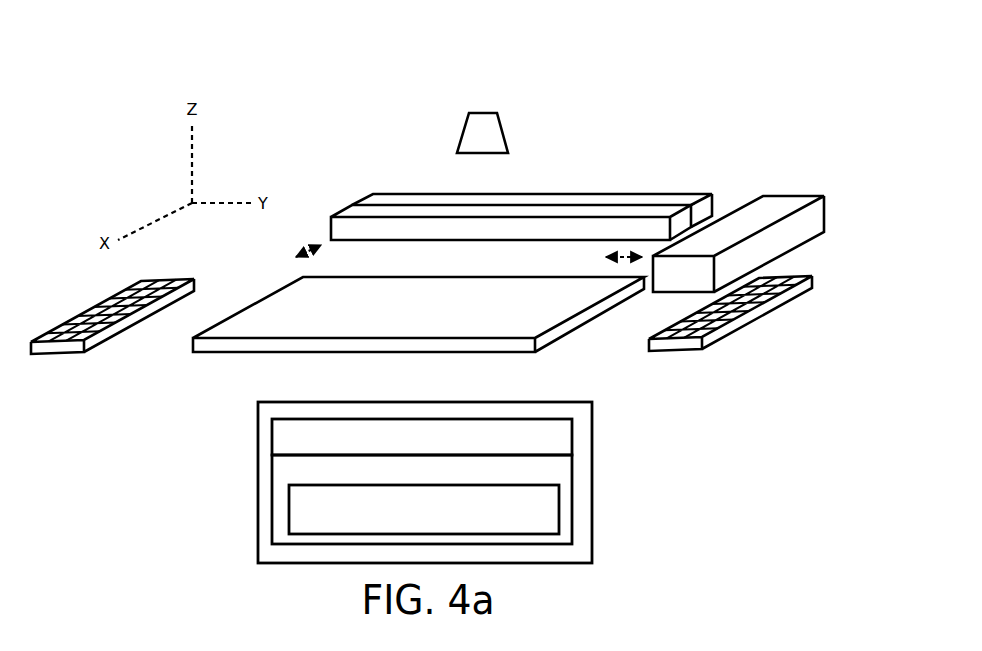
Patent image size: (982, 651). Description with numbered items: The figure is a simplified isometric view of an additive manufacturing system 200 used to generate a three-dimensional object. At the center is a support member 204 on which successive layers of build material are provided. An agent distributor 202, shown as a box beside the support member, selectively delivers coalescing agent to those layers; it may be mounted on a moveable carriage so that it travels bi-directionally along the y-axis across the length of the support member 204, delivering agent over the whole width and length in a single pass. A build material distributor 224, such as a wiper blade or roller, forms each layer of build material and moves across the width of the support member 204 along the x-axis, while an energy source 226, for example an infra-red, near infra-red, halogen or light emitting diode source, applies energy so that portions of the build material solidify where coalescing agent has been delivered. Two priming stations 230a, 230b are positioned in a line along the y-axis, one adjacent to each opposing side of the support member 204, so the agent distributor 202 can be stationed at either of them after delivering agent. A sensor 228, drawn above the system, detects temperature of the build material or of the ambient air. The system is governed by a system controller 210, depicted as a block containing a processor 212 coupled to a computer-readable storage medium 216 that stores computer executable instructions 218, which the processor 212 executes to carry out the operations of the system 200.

The additive manufacturing system 200 is at (722, 126).
The agent distributor 202 is at (768, 196).
The support member 204 is at (373, 354).
The system controller 210 is at (257, 515).
The processor 212 is at (486, 448).
The computer-readable storage medium 216 is at (462, 480).
The computer executable instructions 218 is at (498, 519).
The build material distributor 224 is at (587, 210).
The energy source 226 is at (658, 207).
The sensor 228 is at (483, 112).
The priming station 230a is at (80, 354).
The priming station 230b is at (696, 352).